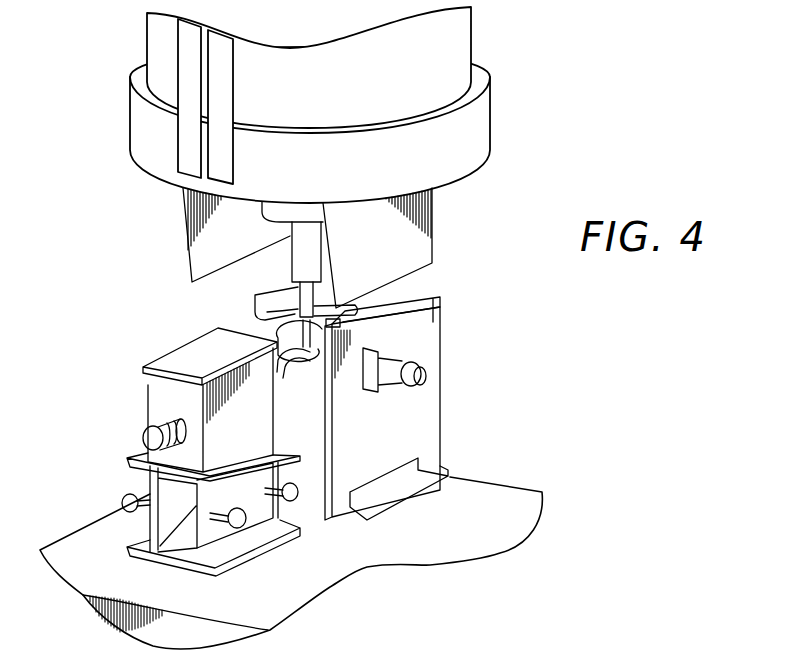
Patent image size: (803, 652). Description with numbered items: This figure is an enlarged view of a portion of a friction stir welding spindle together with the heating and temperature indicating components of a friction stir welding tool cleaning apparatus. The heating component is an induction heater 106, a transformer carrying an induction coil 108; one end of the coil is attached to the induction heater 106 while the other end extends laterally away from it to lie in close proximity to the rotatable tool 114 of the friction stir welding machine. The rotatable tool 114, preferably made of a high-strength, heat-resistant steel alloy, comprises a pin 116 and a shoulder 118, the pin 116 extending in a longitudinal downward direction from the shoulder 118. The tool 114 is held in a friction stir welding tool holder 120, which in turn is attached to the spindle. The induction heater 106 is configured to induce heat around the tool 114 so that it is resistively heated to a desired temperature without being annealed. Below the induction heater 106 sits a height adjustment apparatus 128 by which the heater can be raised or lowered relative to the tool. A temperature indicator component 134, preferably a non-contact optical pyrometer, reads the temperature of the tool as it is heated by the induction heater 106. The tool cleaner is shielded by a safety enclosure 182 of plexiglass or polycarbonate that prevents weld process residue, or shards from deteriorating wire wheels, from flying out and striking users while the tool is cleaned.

The induction heater 106 is at (142, 392).
The induction coil 108 is at (276, 362).
The rotatable tool 114 is at (255, 306).
The pin 116 is at (340, 326).
The shoulder 118 is at (355, 312).
The friction stir welding tool holder 120 is at (307, 255).
The height adjustment apparatus 128 is at (147, 529).
The temperature indicator component 134 is at (425, 378).
The safety enclosure 182 is at (425, 430).